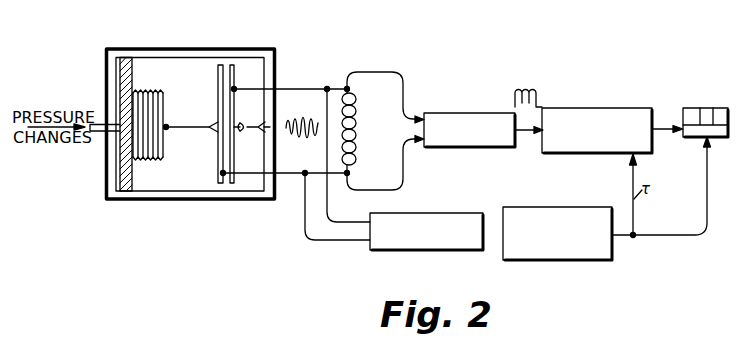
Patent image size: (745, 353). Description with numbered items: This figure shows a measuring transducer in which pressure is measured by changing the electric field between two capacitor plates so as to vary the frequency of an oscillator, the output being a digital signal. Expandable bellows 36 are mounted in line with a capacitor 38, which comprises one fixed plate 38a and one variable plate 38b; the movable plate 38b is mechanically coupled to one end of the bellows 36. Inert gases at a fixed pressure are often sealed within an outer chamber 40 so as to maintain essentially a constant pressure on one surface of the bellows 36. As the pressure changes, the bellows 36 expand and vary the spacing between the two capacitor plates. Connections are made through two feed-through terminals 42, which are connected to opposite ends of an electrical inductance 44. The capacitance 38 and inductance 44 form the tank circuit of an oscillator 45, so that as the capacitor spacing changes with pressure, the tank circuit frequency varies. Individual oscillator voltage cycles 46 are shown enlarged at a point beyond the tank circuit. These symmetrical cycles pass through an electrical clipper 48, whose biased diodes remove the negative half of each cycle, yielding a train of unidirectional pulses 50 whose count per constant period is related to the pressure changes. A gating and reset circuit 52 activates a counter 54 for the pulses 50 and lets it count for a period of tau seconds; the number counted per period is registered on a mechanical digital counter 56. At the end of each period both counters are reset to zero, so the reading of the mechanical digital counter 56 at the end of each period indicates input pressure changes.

The expandable bellows 36 is at (159, 160).
The capacitor 38 is at (212, 120).
The fixed plate 38a is at (232, 104).
The variable plate 38b is at (221, 162).
The outer chamber 40 is at (207, 48).
The feed-through terminals 42 is at (278, 89).
The electrical inductance 44 is at (358, 132).
The oscillator 45 is at (428, 213).
The oscillator voltage cycles 46 is at (308, 142).
The electrical clipper 48 is at (464, 113).
The unidirectional pulses 50 is at (538, 92).
The gating and reset circuit 52 is at (553, 207).
The counter 54 is at (613, 108).
The mechanical digital counter 56 is at (707, 108).